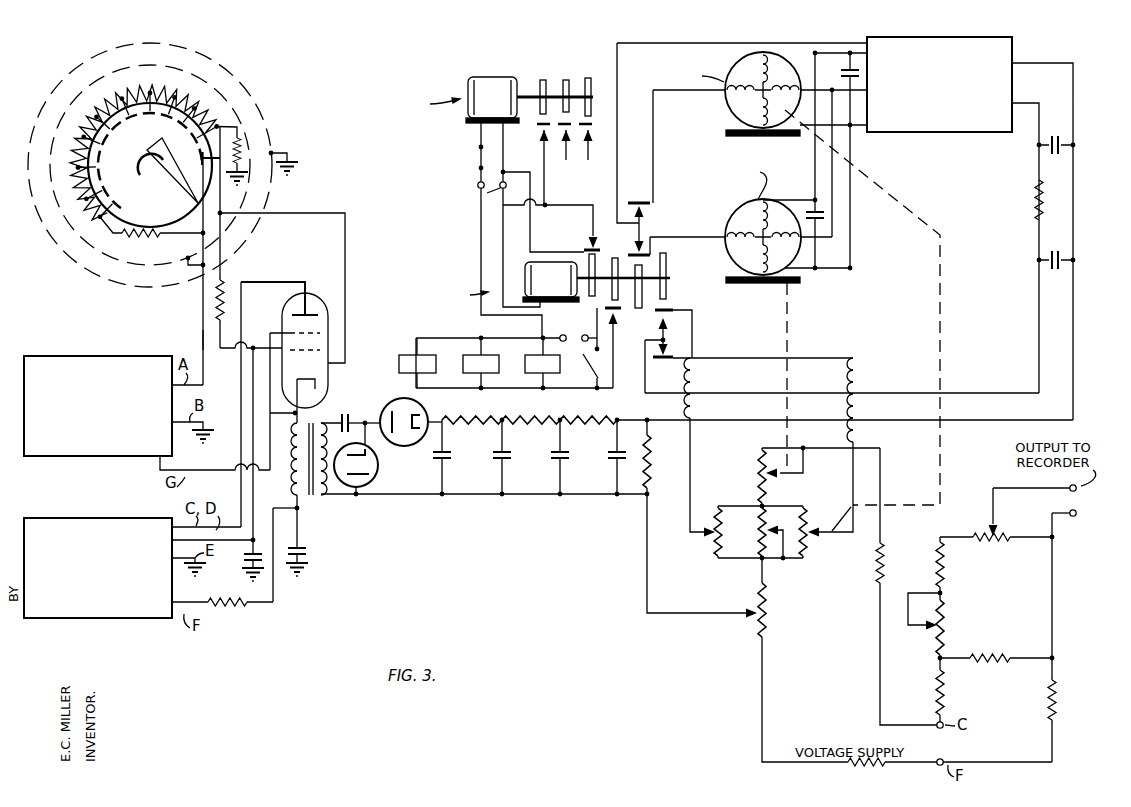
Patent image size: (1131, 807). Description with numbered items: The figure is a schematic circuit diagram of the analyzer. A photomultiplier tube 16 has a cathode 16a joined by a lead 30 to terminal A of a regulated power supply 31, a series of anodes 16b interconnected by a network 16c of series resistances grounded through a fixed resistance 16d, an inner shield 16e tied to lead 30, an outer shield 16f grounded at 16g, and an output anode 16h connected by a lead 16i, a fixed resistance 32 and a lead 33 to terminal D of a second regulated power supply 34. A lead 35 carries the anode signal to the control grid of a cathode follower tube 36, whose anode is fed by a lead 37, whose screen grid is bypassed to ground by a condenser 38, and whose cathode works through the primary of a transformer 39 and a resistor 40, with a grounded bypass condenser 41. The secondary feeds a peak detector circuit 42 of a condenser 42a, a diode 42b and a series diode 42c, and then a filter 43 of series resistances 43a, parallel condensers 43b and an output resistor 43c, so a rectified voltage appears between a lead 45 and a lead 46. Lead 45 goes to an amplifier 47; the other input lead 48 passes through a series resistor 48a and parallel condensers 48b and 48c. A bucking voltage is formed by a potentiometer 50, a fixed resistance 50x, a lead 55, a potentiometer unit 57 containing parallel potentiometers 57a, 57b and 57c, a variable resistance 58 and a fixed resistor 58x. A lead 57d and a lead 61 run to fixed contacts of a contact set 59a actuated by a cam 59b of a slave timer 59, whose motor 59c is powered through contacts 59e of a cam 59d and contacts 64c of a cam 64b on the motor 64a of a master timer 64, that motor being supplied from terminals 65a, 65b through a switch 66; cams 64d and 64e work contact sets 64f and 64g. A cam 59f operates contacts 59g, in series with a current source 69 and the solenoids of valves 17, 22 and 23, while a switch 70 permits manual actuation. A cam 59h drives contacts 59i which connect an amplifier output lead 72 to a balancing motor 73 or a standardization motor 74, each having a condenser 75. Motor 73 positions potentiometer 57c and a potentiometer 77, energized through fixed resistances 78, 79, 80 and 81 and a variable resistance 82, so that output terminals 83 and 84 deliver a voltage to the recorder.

The photomultiplier tube 16 is at (78, 64).
The cathode 16a is at (151, 172).
The anodes 16b is at (105, 138).
The network of series resistances 16c is at (87, 121).
The fixed resistance 16d is at (250, 138).
The inner shield 16e is at (92, 258).
The outer shield 16f is at (48, 230).
The ground connection 16g is at (292, 159).
The anode 16h is at (201, 158).
The lead 16i is at (224, 268).
The valve 17 is at (399, 355).
The valve 22 is at (480, 342).
The valve 23 is at (532, 342).
The lead 30 is at (203, 336).
The regulated power supply 31 is at (51, 356).
The fixed resistance 32 is at (220, 305).
The lead 33 is at (259, 470).
The regulated power supply 34 is at (51, 518).
The lead 35 is at (334, 213).
The cathode follower tube 36 is at (320, 268).
The lead 37 is at (241, 500).
The bypass condenser 38 is at (248, 557).
The transformer 39 is at (300, 509).
The resistor 40 is at (228, 605).
The bypass condenser 41 is at (310, 552).
The peak detector circuit 42 is at (401, 458).
The condenser 42a is at (345, 412).
The rectifier or diode 42b is at (377, 469).
The series rectifier or diode 42c is at (426, 416).
The filter 43 is at (519, 461).
The series resistances 43a is at (566, 414).
The parallel condensers 43b is at (444, 463).
The output resistor 43c is at (648, 472).
The lead 45 is at (719, 426).
The lead 46 is at (702, 567).
The amplifier 47 is at (958, 133).
The lead 48 is at (1037, 241).
The series resistor 48a is at (1034, 204).
The parallel condenser 48b is at (1068, 148).
The parallel condenser 48c is at (1068, 263).
The potentiometer 50 is at (770, 611).
The fixed resistance 50x is at (878, 768).
The lead 55 is at (764, 568).
The potentiometer unit 57 is at (764, 502).
The potentiometer 57a is at (712, 550).
The potentiometer 57b is at (762, 560).
The potentiometer 57c is at (808, 512).
The lead 57d is at (857, 436).
The variable resistance 58 is at (762, 474).
The fixed resistor 58x is at (880, 554).
The slave timer 59 is at (571, 276).
The contact set 59a is at (674, 352).
The cam 59b is at (665, 284).
The motor 59c is at (566, 262).
The cam 59d is at (602, 310).
The contact set 59e is at (591, 236).
The cam 59f is at (595, 257).
The contact set 59g is at (618, 322).
The cam 59h is at (644, 306).
The contact set 59i is at (650, 213).
The lead 61 is at (692, 382).
The master timer 64 is at (510, 117).
The motor 64a is at (503, 78).
The cam 64b is at (543, 78).
The contact set 64c is at (551, 173).
The cam 64d is at (566, 80).
The cam 64e is at (590, 78).
The contact set 64f is at (570, 157).
The contact set 64g is at (595, 130).
The power supply terminal 65a is at (478, 186).
The power supply terminal 65b is at (497, 192).
The switch 66 is at (479, 152).
The current source 69 is at (568, 331).
The switch 70 is at (591, 375).
The amplifier output lead 72 is at (683, 41).
The balancing motor 73 is at (766, 56).
The standardization motor 74 is at (736, 206).
The condenser 75 is at (850, 54).
The potentiometer 77 is at (993, 542).
The fixed resistance 78 is at (945, 692).
The fixed resistance 79 is at (935, 560).
The fixed resistance 80 is at (988, 654).
The fixed resistance 81 is at (1055, 700).
The variable resistance 82 is at (945, 622).
The output terminal 83 is at (1076, 517).
The output terminal 84 is at (1076, 491).